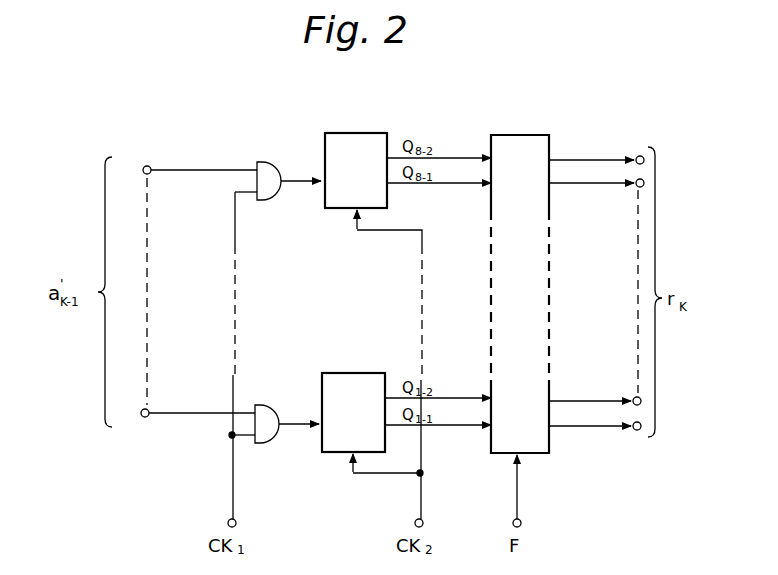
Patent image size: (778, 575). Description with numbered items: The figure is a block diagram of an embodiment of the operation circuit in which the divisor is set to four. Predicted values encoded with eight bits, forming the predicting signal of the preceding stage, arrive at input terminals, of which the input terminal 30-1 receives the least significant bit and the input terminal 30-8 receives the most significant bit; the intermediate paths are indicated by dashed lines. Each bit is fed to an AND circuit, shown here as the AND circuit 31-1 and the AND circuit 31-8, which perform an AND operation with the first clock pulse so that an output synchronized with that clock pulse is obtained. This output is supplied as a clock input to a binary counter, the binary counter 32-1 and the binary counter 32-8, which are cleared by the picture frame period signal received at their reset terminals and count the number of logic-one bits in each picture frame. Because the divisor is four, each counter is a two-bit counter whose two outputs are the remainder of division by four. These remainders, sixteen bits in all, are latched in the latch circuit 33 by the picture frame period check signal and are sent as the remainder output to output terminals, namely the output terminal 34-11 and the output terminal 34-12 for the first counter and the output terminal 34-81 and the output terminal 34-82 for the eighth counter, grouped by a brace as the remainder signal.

The input terminal 30-8 is at (148, 166).
The input terminal 30-1 is at (149, 410).
The AND circuit 31-8 is at (261, 161).
The AND circuit 31-1 is at (261, 405).
The binary counter 32-8 is at (360, 133).
The binary counter 32-1 is at (365, 372).
The latch circuit 33 is at (530, 135).
The output terminal 34-82 is at (640, 156).
The output terminal 34-81 is at (639, 188).
The output terminal 34-12 is at (634, 397).
The output terminal 34-11 is at (637, 431).